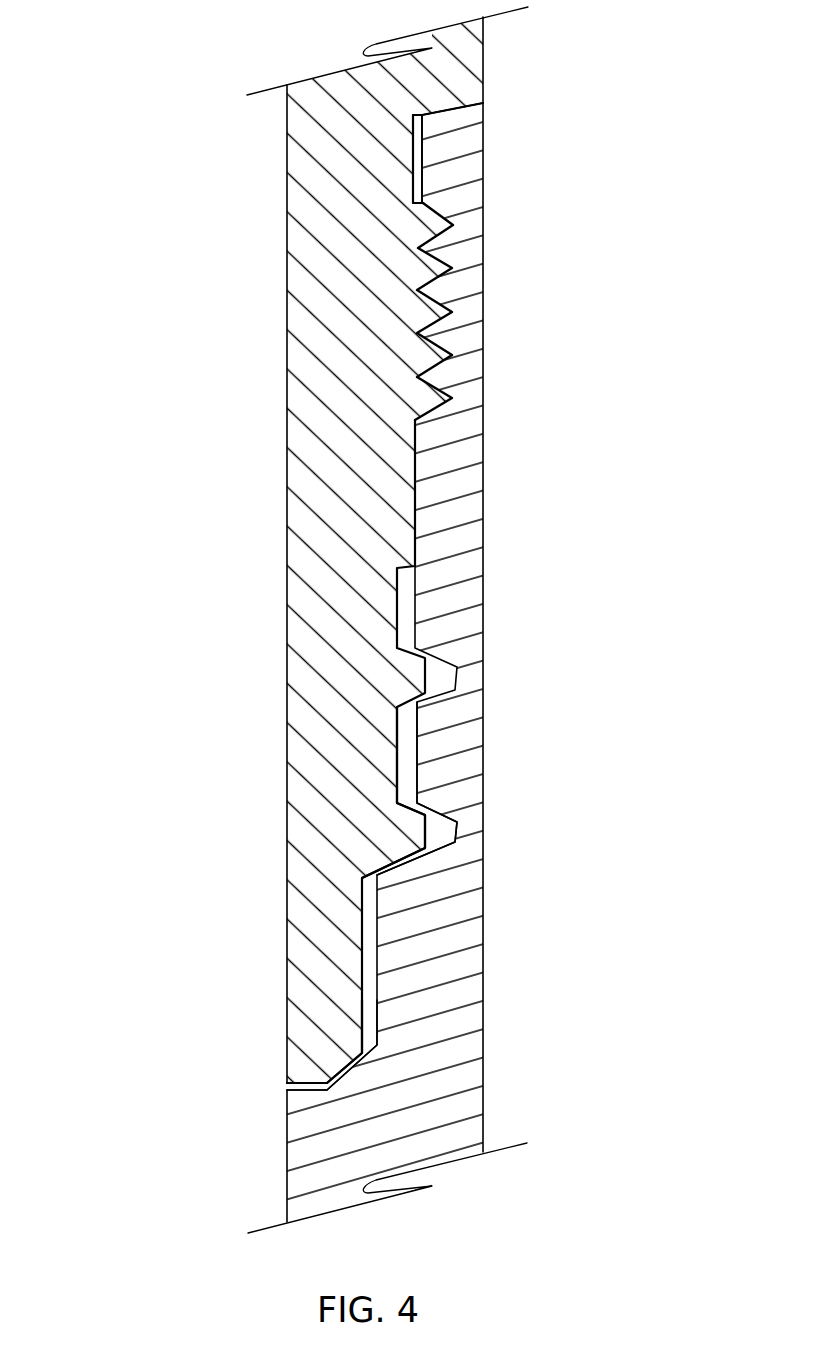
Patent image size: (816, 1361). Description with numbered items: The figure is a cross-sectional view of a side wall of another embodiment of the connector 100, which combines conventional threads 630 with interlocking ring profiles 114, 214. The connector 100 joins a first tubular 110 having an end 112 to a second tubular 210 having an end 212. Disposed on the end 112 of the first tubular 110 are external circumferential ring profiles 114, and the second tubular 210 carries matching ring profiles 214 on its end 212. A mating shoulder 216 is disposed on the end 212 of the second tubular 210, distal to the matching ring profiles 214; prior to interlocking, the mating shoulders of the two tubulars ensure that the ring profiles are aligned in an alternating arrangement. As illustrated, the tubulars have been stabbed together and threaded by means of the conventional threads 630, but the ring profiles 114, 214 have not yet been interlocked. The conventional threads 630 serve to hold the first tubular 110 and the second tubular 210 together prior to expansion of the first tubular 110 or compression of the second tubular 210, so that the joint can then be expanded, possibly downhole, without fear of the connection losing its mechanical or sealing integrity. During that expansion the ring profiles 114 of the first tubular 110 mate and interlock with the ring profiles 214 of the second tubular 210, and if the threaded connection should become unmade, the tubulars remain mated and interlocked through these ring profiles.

The connector 100 is at (82, 22).
The first tubular 110 is at (342, 242).
The end 112 is at (300, 1083).
The external circumferential ring profiles 114 is at (423, 825).
The second tubular 210 is at (453, 998).
The end 212 is at (453, 107).
The ring profiles 214 is at (457, 832).
The mating shoulder 216 is at (300, 1089).
The conventional threads 630 is at (453, 400).